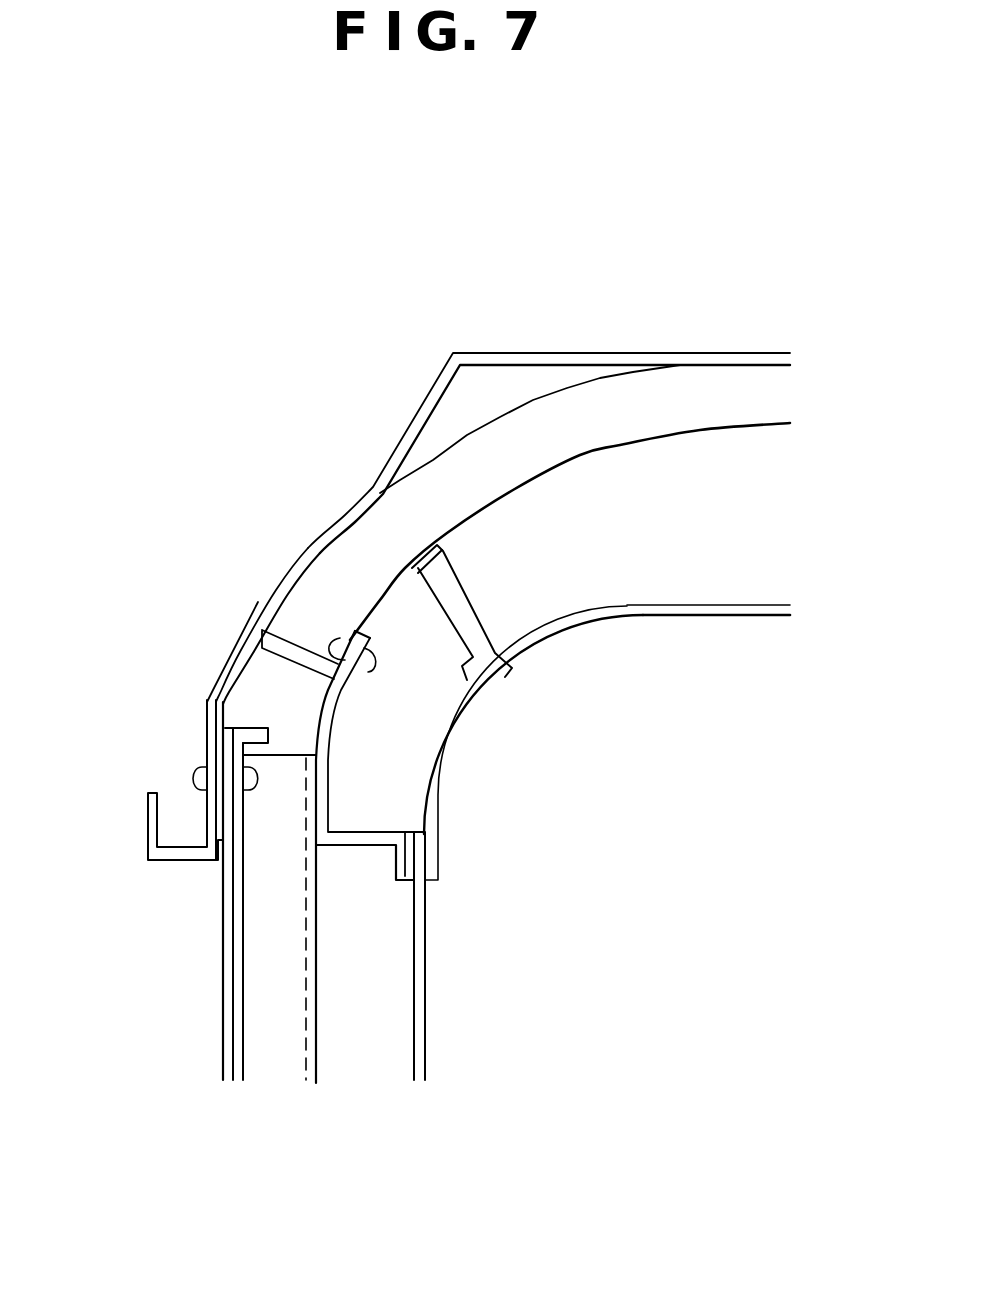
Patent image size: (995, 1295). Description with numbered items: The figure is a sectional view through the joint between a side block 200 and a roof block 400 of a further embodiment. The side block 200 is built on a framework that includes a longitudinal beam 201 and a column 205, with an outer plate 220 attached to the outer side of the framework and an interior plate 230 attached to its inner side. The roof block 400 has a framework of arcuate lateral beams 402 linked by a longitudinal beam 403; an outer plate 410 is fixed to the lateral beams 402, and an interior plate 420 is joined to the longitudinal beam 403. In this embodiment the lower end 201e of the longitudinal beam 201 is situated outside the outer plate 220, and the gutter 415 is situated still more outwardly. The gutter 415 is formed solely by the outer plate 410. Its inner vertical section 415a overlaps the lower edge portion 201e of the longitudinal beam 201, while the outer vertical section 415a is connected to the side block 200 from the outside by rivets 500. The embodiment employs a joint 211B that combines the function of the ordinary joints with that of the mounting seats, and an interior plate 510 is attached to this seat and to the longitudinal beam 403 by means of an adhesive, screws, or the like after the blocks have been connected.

The roof block 400 is at (338, 426).
The outer plate 410 is at (308, 548).
The arcuate lateral beam 402 is at (697, 412).
The longitudinal beam 403 is at (460, 613).
The longitudinal beam 201 is at (229, 603).
The vertical section of gutter 415a is at (207, 706).
The lower end of longitudinal beam 201e is at (216, 753).
The interior plate 420 is at (660, 617).
The rivet 500 is at (192, 770).
The gutter 415 is at (177, 810).
The interior plate 510 is at (450, 771).
The side block 200 is at (200, 897).
The joint 211B is at (360, 848).
The outer plate 220 is at (222, 1013).
The interior plate 230 is at (426, 1023).
The column 205 is at (270, 1060).